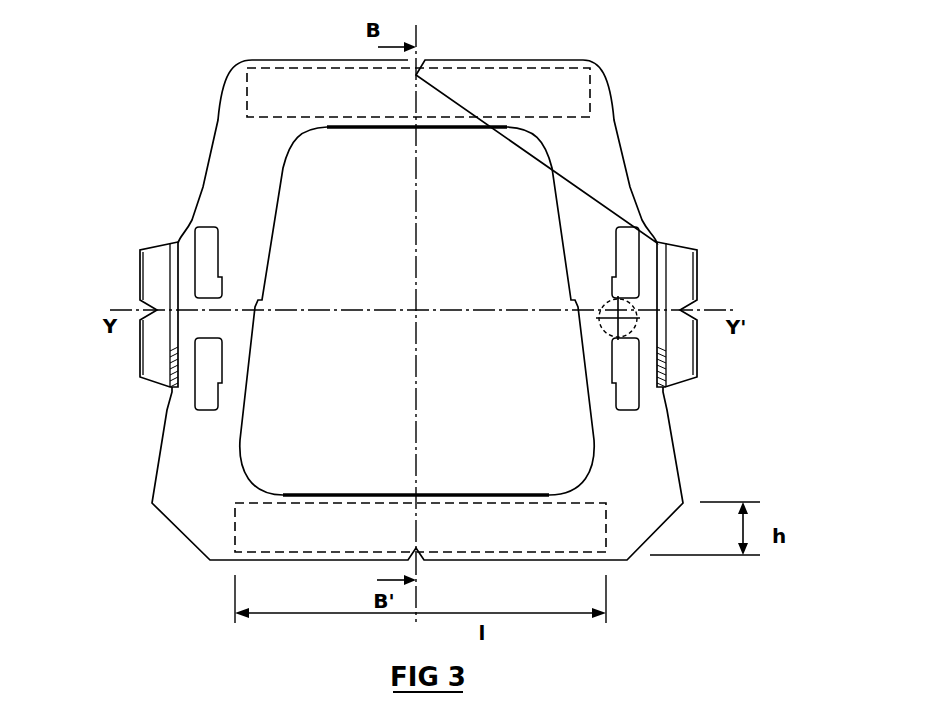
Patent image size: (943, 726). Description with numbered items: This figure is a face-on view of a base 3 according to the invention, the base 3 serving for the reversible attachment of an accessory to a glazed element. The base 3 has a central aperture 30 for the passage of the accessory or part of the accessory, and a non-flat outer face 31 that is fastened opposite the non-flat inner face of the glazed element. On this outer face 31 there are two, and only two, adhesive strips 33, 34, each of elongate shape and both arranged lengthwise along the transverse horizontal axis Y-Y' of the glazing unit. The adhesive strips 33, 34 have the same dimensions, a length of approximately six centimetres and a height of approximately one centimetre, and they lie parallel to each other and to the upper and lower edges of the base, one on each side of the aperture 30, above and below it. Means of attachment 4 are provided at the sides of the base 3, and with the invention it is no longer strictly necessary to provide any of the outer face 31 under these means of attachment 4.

The base 3 is at (418, 296).
The means of attachment 4 is at (117, 287).
The aperture 30 is at (381, 315).
The outer face 31 is at (613, 158).
The adhesive strip 33 is at (582, 102).
The adhesive strip 34 is at (597, 515).